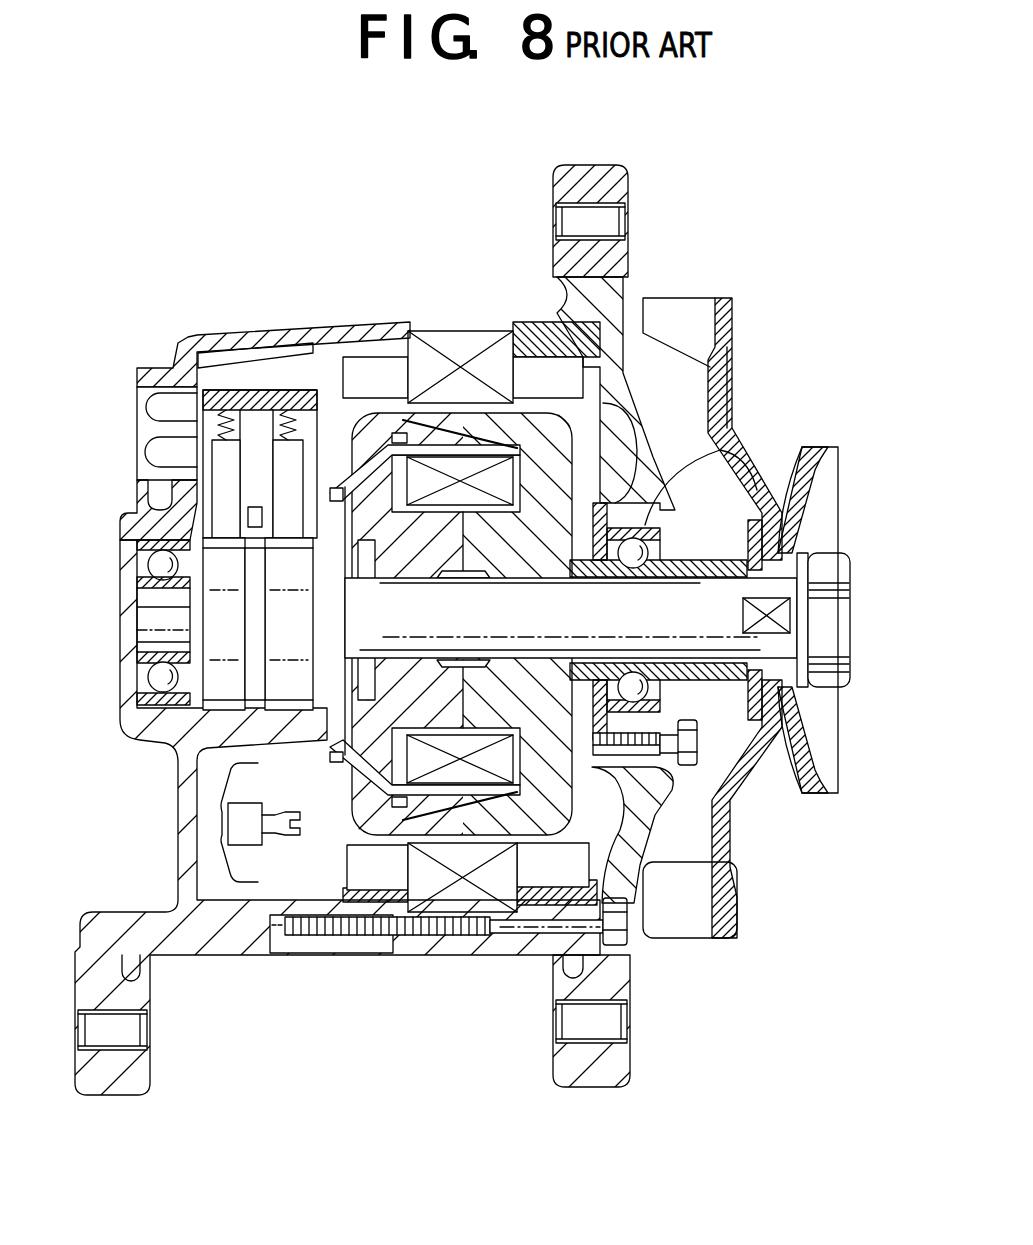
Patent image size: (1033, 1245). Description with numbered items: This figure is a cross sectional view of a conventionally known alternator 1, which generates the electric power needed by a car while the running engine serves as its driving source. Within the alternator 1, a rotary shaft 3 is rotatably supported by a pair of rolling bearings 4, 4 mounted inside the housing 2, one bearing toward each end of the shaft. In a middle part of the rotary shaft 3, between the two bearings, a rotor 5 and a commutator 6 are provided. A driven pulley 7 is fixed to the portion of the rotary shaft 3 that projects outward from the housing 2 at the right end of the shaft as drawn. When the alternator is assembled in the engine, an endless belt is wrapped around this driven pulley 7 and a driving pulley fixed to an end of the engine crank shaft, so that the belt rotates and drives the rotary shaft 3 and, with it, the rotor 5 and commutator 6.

The alternator 1 is at (645, 232).
The housing 2 is at (368, 950).
The rotary shaft 3 is at (694, 596).
The rolling bearings 4 is at (147, 527).
The rotor 5 is at (385, 818).
The commutator 6 is at (220, 606).
The driven pulley 7 is at (807, 503).